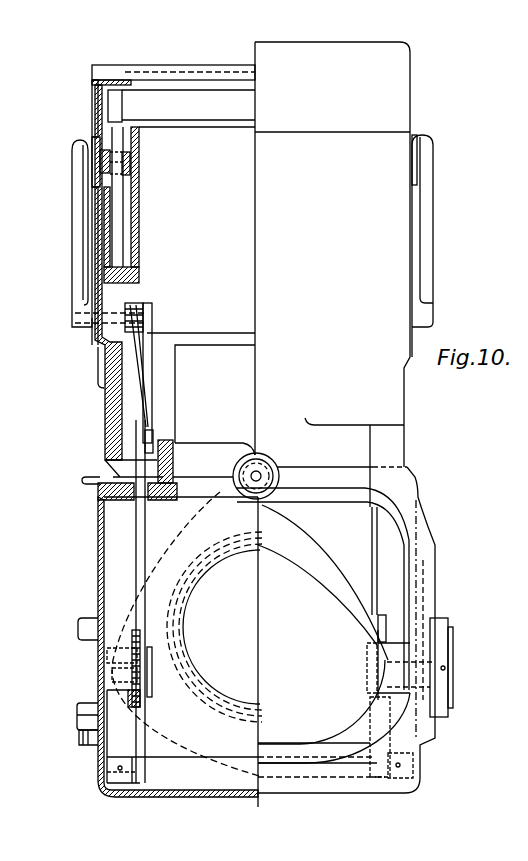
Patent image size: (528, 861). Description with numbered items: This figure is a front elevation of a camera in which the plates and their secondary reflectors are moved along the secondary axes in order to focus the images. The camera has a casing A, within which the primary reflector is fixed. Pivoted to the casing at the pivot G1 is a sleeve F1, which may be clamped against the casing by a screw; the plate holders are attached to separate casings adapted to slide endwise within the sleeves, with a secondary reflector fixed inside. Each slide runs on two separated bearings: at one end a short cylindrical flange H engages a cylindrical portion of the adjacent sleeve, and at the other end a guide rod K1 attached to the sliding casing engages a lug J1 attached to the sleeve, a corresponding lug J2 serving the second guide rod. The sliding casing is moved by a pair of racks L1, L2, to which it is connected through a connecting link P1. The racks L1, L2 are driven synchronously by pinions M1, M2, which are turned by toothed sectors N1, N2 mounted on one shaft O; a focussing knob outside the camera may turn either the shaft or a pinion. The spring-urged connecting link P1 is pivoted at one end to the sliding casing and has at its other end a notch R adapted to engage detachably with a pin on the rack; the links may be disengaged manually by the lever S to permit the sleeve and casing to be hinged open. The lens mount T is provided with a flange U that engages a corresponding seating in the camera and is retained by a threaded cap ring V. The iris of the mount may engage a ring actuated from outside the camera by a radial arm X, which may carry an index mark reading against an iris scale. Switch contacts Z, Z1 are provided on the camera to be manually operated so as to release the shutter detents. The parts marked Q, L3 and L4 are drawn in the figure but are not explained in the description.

The pivot G1 is at (395, 450).
The lever S is at (78, 234).
The lug J2 is at (415, 137).
The sleeve F1 is at (100, 263).
The guide rod K1 is at (118, 243).
The lug J1 is at (131, 162).
The pin Q is at (77, 320).
The connecting link P1 is at (123, 400).
The notch R is at (150, 438).
The threaded cap ring V is at (168, 445).
The flange U is at (193, 457).
The cylindrical flange H is at (107, 458).
The radial arm X is at (83, 481).
The casing A is at (103, 563).
The lens mount T is at (217, 495).
The rack L1 is at (140, 570).
The rack L3 is at (137, 633).
The pinion M1 is at (130, 690).
The switch contact Z is at (87, 715).
The switch contact Z1 is at (80, 743).
The toothed sector N1 is at (133, 745).
The shaft O is at (187, 767).
The rack L2 is at (373, 545).
The link L4 is at (385, 615).
The pinion M2 is at (383, 695).
The toothed sector N2 is at (383, 722).